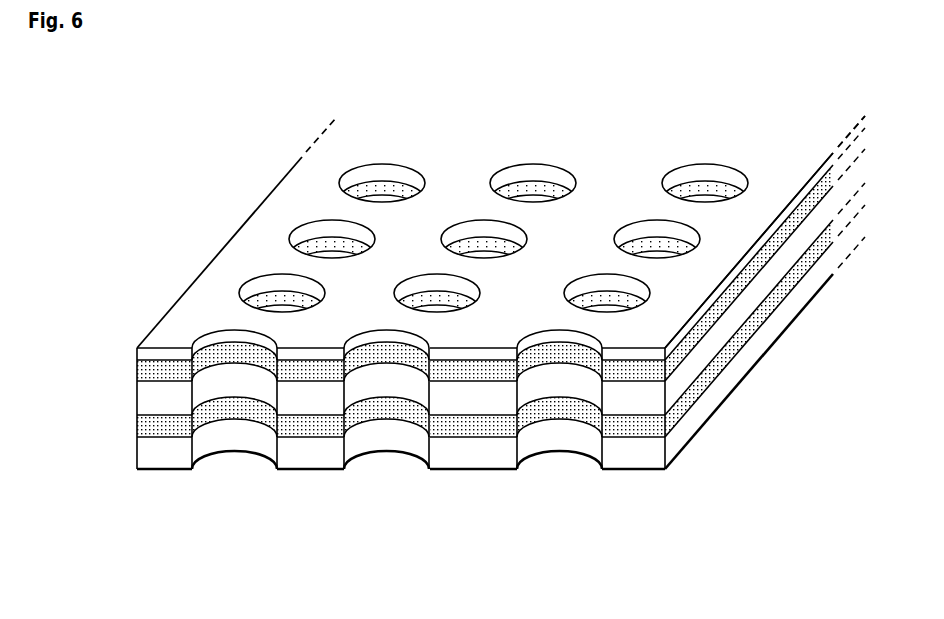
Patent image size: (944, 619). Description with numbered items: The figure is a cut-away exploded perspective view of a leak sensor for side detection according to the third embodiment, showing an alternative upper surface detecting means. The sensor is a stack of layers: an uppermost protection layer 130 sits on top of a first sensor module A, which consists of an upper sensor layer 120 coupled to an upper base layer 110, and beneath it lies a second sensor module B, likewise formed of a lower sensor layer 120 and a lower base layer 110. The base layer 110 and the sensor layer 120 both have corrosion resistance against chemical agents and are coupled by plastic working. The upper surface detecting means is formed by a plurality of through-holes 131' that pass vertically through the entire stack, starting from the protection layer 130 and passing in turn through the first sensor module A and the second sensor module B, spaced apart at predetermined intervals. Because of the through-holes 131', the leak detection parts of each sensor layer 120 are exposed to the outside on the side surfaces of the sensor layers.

The base layer 110 is at (140, 398).
The sensor layer 120 is at (137, 373).
The protection layer 130 is at (281, 212).
The through-holes 131' is at (222, 355).
The first sensor module A is at (68, 353).
The second sensor module B is at (68, 437).